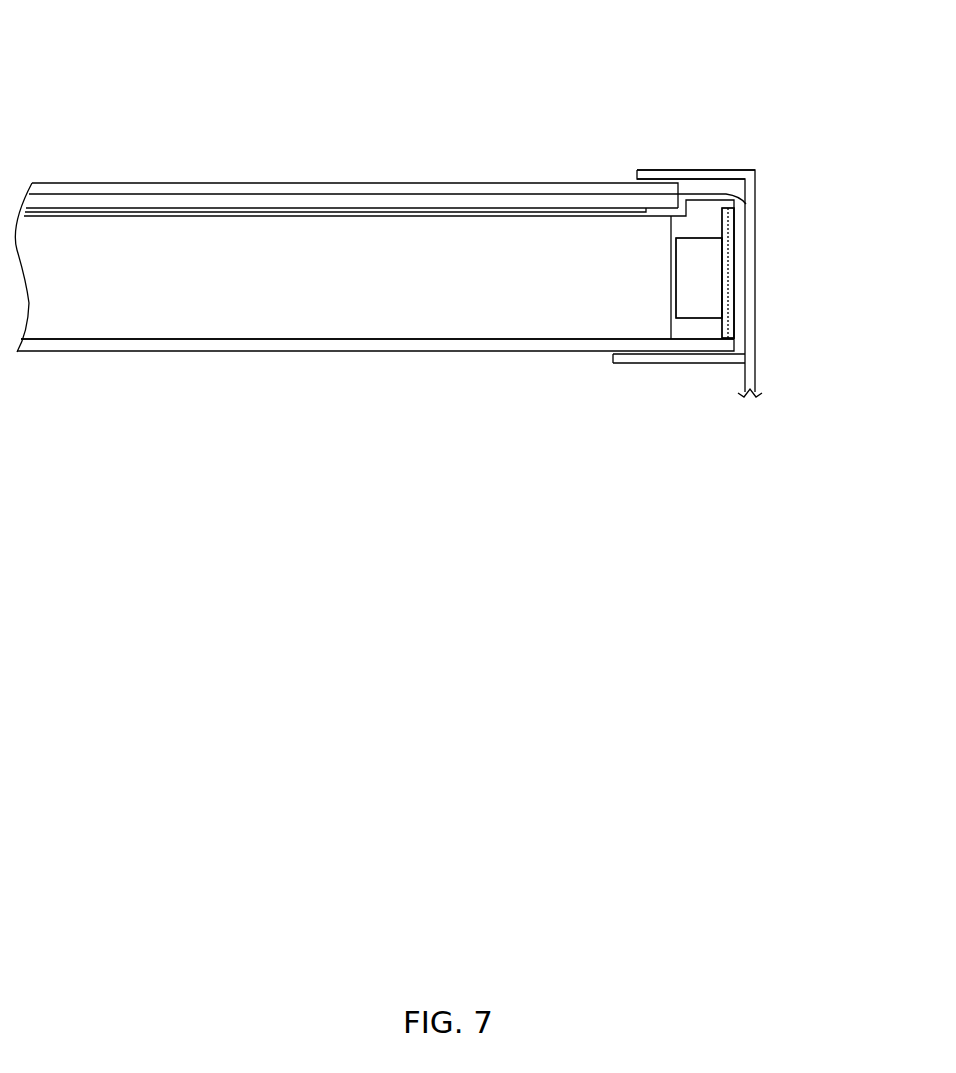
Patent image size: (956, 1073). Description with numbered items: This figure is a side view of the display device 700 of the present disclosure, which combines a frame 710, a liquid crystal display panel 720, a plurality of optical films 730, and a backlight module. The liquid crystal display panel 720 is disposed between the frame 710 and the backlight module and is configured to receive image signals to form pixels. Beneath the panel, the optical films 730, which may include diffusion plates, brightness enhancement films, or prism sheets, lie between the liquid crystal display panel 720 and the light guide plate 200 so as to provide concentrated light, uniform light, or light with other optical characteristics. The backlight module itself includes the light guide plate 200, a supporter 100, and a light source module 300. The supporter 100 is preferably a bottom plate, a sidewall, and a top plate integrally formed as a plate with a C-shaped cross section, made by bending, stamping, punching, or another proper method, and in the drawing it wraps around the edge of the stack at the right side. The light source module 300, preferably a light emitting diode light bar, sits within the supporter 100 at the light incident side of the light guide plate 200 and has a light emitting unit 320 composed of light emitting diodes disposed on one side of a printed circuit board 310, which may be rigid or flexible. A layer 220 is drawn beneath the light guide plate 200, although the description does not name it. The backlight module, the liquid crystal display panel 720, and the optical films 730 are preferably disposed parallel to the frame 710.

The display device 700 is at (190, 38).
The supporter 100 is at (747, 216).
The frame 710 is at (697, 172).
The liquid crystal display panel 720 is at (472, 190).
The optical films 730 is at (263, 208).
The light guide plate 200 is at (378, 273).
The bottom layer 220 is at (427, 347).
The light source module 300 is at (840, 285).
The printed circuit board 310 is at (723, 330).
The light emitting unit 320 is at (710, 256).